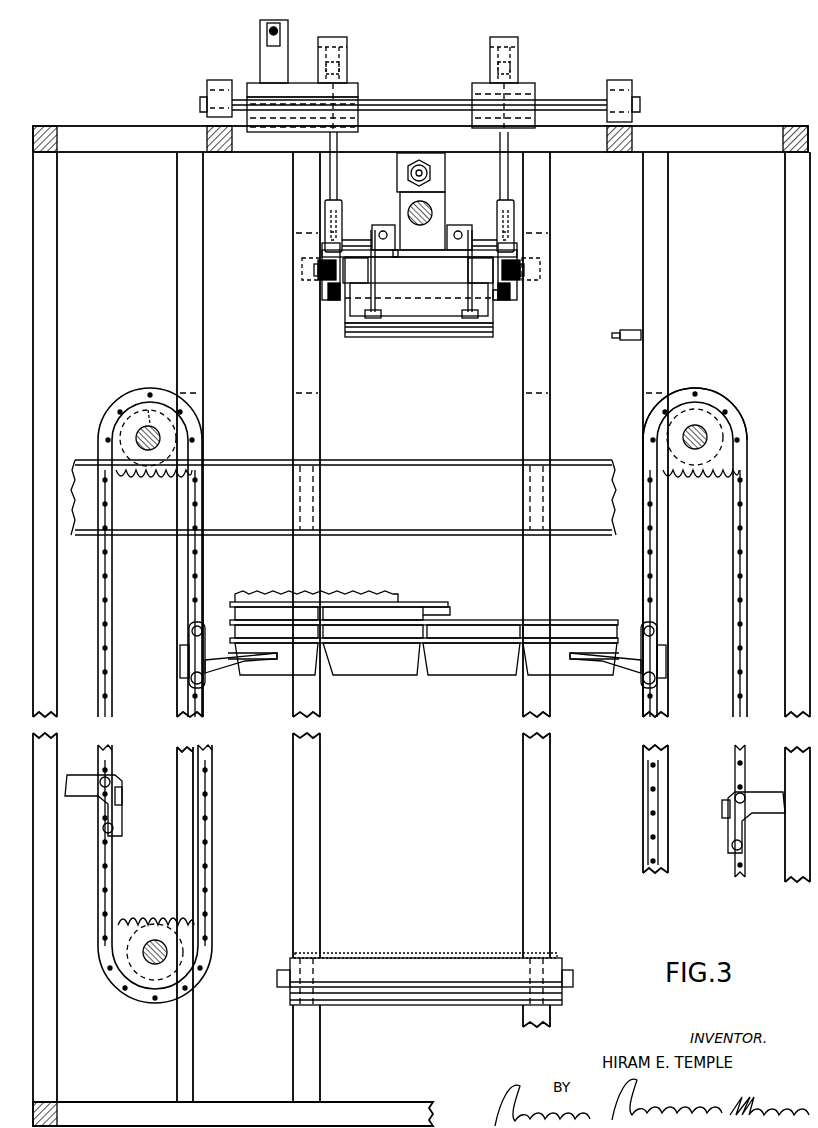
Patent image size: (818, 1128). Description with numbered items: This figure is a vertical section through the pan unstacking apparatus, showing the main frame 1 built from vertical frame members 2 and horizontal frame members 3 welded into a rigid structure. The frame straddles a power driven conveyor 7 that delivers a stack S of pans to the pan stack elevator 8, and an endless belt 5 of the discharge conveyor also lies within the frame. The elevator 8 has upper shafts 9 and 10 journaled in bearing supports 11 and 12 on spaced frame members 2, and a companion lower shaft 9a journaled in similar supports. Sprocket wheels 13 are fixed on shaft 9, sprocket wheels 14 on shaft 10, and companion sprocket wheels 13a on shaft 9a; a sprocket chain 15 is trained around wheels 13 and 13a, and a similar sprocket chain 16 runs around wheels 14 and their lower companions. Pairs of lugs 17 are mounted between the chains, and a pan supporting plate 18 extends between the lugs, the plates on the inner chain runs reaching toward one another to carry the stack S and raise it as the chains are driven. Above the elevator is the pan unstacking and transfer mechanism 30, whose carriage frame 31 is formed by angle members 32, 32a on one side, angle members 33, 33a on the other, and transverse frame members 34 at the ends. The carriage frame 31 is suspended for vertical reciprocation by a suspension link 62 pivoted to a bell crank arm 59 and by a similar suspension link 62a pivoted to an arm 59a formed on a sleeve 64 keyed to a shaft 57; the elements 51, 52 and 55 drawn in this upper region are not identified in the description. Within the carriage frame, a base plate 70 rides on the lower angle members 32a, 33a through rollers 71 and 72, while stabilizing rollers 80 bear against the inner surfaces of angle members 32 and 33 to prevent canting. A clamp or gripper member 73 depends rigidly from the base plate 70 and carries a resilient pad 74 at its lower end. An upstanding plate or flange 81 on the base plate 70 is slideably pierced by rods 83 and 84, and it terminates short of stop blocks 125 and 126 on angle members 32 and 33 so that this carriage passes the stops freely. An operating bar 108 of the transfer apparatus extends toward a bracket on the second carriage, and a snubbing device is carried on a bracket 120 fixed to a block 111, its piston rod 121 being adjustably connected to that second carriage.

The main frame 1 is at (704, 98).
The vertical frame members 2 is at (194, 371).
The horizontal frame members 3 is at (722, 148).
The endless belt 5 is at (628, 330).
The power driven conveyor 7 is at (570, 953).
The pan stack elevator 8 is at (706, 370).
The upper shaft 9 is at (140, 435).
The lower shaft 9a is at (144, 958).
The upper shaft 10 is at (712, 437).
The bearing support 11 is at (150, 939).
The bearing support 12 is at (688, 421).
The sprocket wheels 13 is at (147, 482).
The companion sprocket wheels 13a is at (150, 910).
The sprocket wheels 14 is at (695, 485).
The sprocket chain 15 is at (113, 653).
The sprocket chain 16 is at (656, 590).
The lugs 17 is at (224, 690).
The pan supporting plate 18 is at (230, 671).
The pan unstacking and transfer mechanism 30 is at (530, 202).
The carriage frame 31 is at (510, 296).
The angle member 32 is at (320, 243).
The angle member 32a is at (330, 290).
The angle member 33 is at (520, 243).
The angle member 33a is at (507, 289).
The transverse frame members 34 is at (397, 304).
The switch 51 is at (280, 25).
The switch post 52 is at (262, 60).
The drive housing 55 is at (304, 87).
The shaft 57 is at (394, 101).
The bell crank arm 59 is at (348, 61).
The arm 59a is at (524, 61).
The suspension link 62 is at (337, 176).
The suspension link 62a is at (500, 180).
The sleeve 64 is at (532, 92).
The base plate 70 is at (425, 272).
The roller 71 is at (318, 267).
The roller 72 is at (522, 268).
The clamp or gripper member 73 is at (493, 318).
The resilient pad 74 is at (450, 333).
The stabilizing rollers 80 is at (418, 270).
The upstanding plate or flange 81 is at (375, 251).
The rod 83 is at (395, 248).
The rod 84 is at (463, 251).
The operating bar 108 is at (422, 221).
The block 111 is at (434, 214).
The bracket 120 is at (439, 181).
The piston rod 121 is at (400, 182).
The stop block 125 is at (375, 229).
The stop block 126 is at (475, 231).
The stack of pans S is at (418, 686).